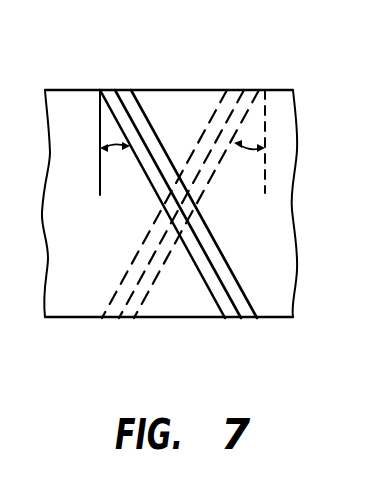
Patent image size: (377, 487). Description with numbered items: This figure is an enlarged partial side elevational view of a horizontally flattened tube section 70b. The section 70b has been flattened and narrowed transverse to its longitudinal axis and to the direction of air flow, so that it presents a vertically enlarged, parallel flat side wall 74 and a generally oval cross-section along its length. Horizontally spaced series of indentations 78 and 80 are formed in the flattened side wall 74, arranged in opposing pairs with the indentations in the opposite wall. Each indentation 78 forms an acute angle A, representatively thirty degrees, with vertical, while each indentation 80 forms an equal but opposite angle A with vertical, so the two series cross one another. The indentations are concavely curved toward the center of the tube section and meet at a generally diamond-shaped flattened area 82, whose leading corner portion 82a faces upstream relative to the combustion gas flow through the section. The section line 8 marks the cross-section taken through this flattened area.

The flat side wall 74 is at (273, 268).
The diamond-shaped flattened area 82 is at (172, 212).
The leading corner portion 82a is at (200, 203).
The indentation 80 is at (213, 110).
The tube section 70b is at (281, 90).
The indentation 78 is at (247, 300).
The acute angle A is at (116, 149).
The section line 8- 8 is at (158, 53).